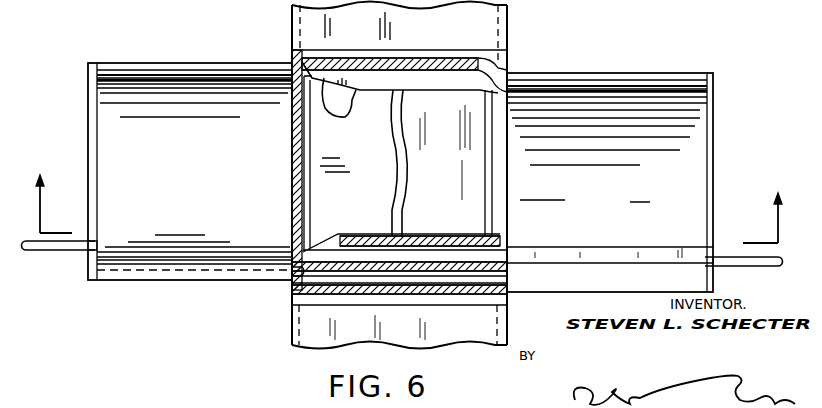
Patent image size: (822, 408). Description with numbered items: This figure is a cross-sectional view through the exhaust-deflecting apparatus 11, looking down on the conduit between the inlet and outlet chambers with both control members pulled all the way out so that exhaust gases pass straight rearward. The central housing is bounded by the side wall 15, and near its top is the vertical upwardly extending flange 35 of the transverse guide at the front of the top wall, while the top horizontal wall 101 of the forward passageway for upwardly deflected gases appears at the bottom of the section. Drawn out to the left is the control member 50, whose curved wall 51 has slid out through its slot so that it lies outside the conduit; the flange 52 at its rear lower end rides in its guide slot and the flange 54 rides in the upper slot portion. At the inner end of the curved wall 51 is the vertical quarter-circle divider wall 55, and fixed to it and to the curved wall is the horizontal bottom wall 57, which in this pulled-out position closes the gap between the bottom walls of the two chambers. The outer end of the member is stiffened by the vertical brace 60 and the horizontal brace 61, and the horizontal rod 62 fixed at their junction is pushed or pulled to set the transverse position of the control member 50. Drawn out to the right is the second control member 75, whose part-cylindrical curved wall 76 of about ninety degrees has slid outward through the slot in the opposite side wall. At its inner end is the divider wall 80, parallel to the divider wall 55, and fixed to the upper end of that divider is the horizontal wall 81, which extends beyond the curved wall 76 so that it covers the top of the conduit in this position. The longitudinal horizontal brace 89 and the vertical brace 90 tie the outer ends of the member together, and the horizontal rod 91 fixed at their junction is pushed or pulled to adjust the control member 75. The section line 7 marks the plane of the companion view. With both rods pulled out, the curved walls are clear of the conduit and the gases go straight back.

The section line 7— 7 is at (408, 209).
The apparatus 11 is at (290, 17).
The side wall 15 is at (292, 137).
The vertical upwardly extending flange 35 is at (420, 56).
The control member 50 is at (162, 180).
The curved wall 51 is at (185, 199).
The flange 52 is at (228, 48).
The flange 54 is at (232, 268).
The divider wall 55 is at (312, 137).
The bottom wall 57 is at (360, 199).
The vertical brace 60 is at (90, 255).
The horizontal brace 61 is at (93, 158).
The horizontal rod 62 is at (55, 252).
The second control member 75 is at (639, 182).
The curved wall 76 is at (605, 217).
The divider wall 80 is at (484, 206).
The horizontal wall 81 is at (457, 174).
The longitudinal horizontal brace 89 is at (706, 122).
The vertical brace 90 is at (712, 264).
The horizontal rod 91 is at (766, 266).
The top horizontal wall 101 is at (312, 322).